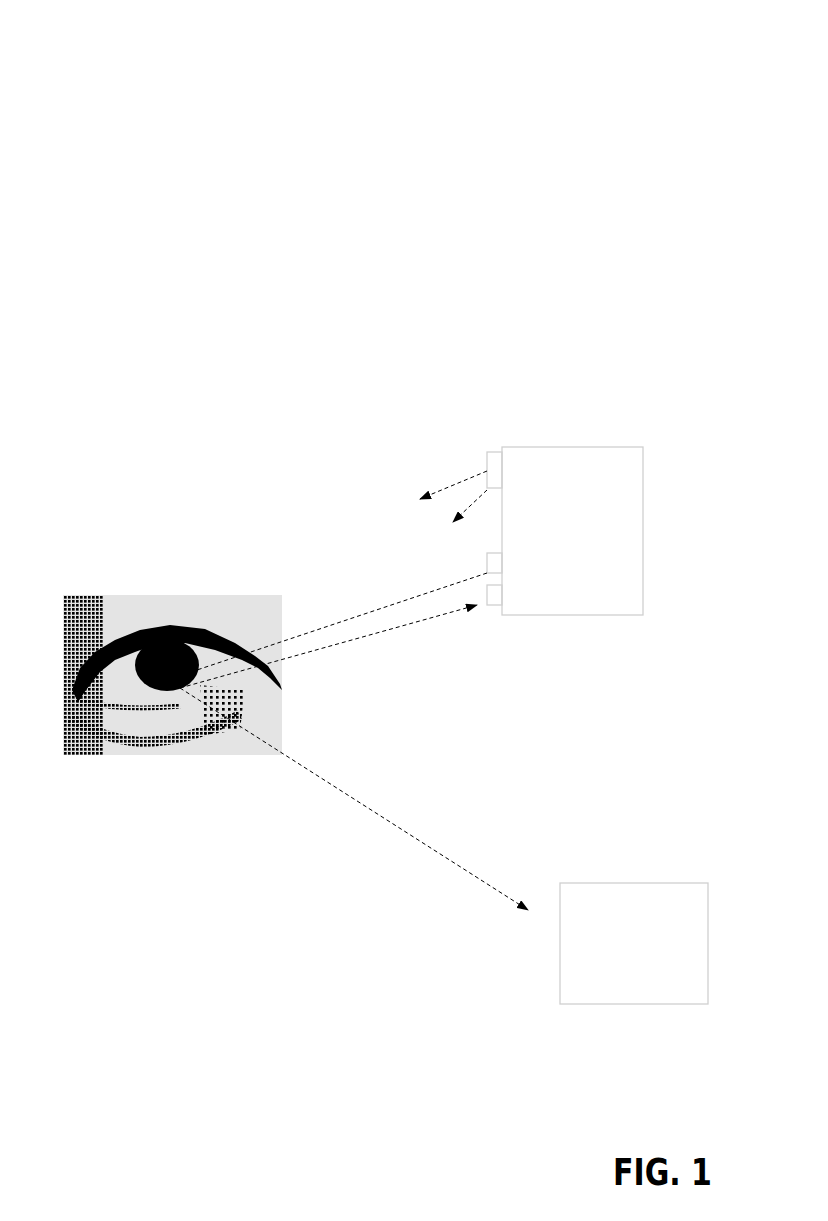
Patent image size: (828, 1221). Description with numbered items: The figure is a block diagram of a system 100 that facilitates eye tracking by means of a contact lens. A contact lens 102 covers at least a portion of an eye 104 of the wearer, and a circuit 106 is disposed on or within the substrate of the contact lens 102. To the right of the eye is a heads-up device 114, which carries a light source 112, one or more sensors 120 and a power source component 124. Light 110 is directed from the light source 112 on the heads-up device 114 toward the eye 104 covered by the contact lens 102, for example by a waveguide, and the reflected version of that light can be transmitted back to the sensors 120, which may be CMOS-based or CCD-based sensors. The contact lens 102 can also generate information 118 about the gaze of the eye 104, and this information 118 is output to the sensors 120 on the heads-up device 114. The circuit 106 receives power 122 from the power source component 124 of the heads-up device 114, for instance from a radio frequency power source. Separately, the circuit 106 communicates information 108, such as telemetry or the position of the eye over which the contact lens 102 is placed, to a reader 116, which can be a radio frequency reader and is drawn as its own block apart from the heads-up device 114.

The system 100 is at (407, 40).
The contact lens 102 is at (135, 678).
The eye 104 is at (166, 675).
The circuit 106 is at (170, 697).
The information 108 is at (320, 797).
The light 110 is at (448, 463).
The light source 112 is at (493, 447).
The heads-up device 114 is at (512, 517).
The reader 116 is at (634, 943).
The information 118 is at (322, 647).
The sensor 120 is at (497, 604).
The power 122 is at (355, 615).
The power source component 124 is at (502, 553).